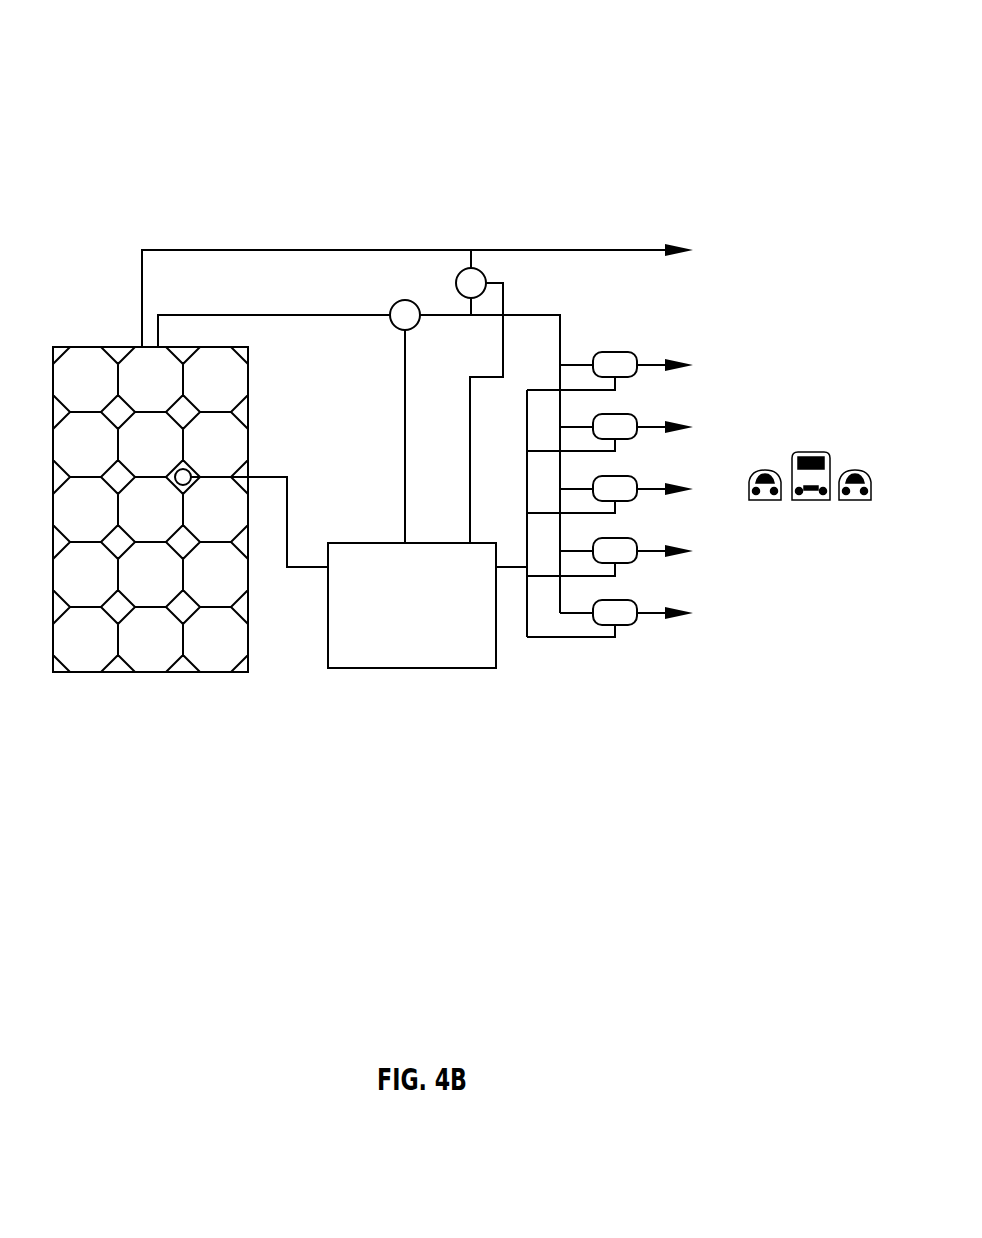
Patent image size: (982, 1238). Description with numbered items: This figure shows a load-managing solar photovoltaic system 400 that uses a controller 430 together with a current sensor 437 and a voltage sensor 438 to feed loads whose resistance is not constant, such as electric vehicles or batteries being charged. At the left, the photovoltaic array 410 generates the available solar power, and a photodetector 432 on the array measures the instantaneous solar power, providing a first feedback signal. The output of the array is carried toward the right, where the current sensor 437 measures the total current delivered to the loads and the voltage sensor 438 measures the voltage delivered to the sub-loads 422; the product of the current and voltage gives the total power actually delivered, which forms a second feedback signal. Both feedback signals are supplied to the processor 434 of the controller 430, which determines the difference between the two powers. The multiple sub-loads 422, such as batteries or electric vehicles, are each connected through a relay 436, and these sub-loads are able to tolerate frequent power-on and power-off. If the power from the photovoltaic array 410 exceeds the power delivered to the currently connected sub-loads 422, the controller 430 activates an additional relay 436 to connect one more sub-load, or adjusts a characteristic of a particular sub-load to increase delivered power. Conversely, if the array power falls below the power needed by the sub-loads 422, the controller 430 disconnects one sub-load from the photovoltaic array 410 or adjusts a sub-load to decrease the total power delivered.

The load-managing solar photovoltaic system 400 is at (422, 84).
The photovoltaic array 410 is at (118, 663).
The sub-loads 422 is at (773, 489).
The controller 430 is at (627, 712).
The photodetector 432 is at (190, 467).
The processor 434 is at (395, 617).
The relay 436 is at (590, 651).
The current sensor 437 is at (397, 302).
The voltage sensor 438 is at (463, 270).